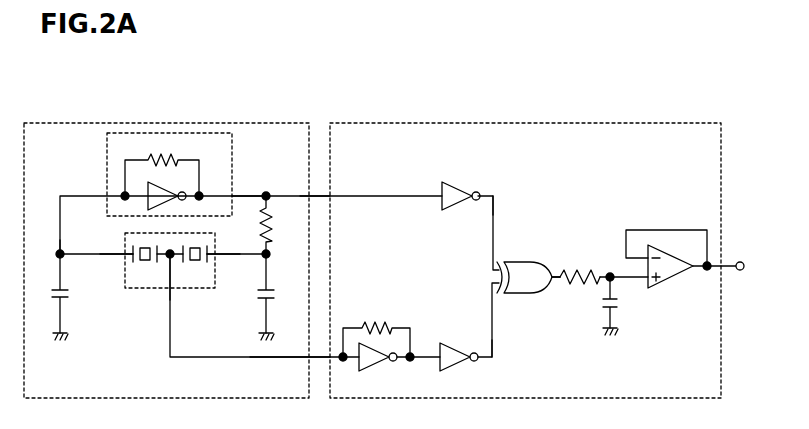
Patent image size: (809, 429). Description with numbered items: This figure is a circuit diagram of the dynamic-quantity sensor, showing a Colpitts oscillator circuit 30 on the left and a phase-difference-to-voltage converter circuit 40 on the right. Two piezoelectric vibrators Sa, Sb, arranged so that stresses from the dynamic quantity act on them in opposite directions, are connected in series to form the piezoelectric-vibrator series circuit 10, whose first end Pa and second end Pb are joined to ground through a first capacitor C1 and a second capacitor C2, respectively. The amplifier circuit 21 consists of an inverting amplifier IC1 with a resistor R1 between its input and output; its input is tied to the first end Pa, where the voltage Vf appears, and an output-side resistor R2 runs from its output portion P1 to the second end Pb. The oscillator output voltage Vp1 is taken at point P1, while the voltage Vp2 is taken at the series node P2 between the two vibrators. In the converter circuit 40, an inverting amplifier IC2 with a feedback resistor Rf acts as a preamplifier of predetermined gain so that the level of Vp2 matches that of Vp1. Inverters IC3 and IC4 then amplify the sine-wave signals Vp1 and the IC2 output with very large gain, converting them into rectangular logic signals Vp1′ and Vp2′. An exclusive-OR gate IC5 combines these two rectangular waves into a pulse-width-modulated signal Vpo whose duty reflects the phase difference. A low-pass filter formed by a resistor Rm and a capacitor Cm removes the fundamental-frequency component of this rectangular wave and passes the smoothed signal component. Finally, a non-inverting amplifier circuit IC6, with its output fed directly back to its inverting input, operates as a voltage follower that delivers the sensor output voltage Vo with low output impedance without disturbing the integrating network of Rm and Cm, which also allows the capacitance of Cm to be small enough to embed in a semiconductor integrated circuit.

The piezoelectric-vibrator series circuit 10 is at (126, 290).
The amplifier circuit 21 is at (193, 133).
The Colpitts oscillator circuit 30 is at (309, 123).
The phase-difference-to-voltage converter circuit 40 is at (721, 123).
The resistor R1 is at (162, 166).
The inverting amplifier IC1 is at (170, 204).
The output-side resistor R2 is at (278, 225).
The first capacitor C1 is at (71, 297).
The second capacitor C2 is at (277, 297).
The piezoelectric vibrator Sa is at (145, 265).
The piezoelectric vibrator Sb is at (196, 265).
The first end Pa is at (122, 258).
The second end Pb is at (217, 258).
The output portion P1 is at (237, 193).
The series node P2 is at (172, 292).
The feedback voltage Vf is at (58, 251).
The output voltage Vp1 is at (311, 195).
The voltage at series node Vp2 is at (290, 368).
The signal Vp1' Vp1′ is at (497, 201).
The signal Vp2' Vp2′ is at (492, 357).
The feedback resistor Rf is at (376, 328).
The inverting amplifier IC2 is at (378, 368).
The inverter IC3 is at (461, 209).
The inverter IC4 is at (459, 368).
The exclusive-OR gate IC5 is at (524, 289).
The PWM signal Vpo is at (557, 272).
The resistor Rm is at (580, 267).
The capacitor Cm is at (625, 306).
The non-inverting amplifier circuit IC6 is at (672, 273).
The output voltage Vo is at (745, 255).